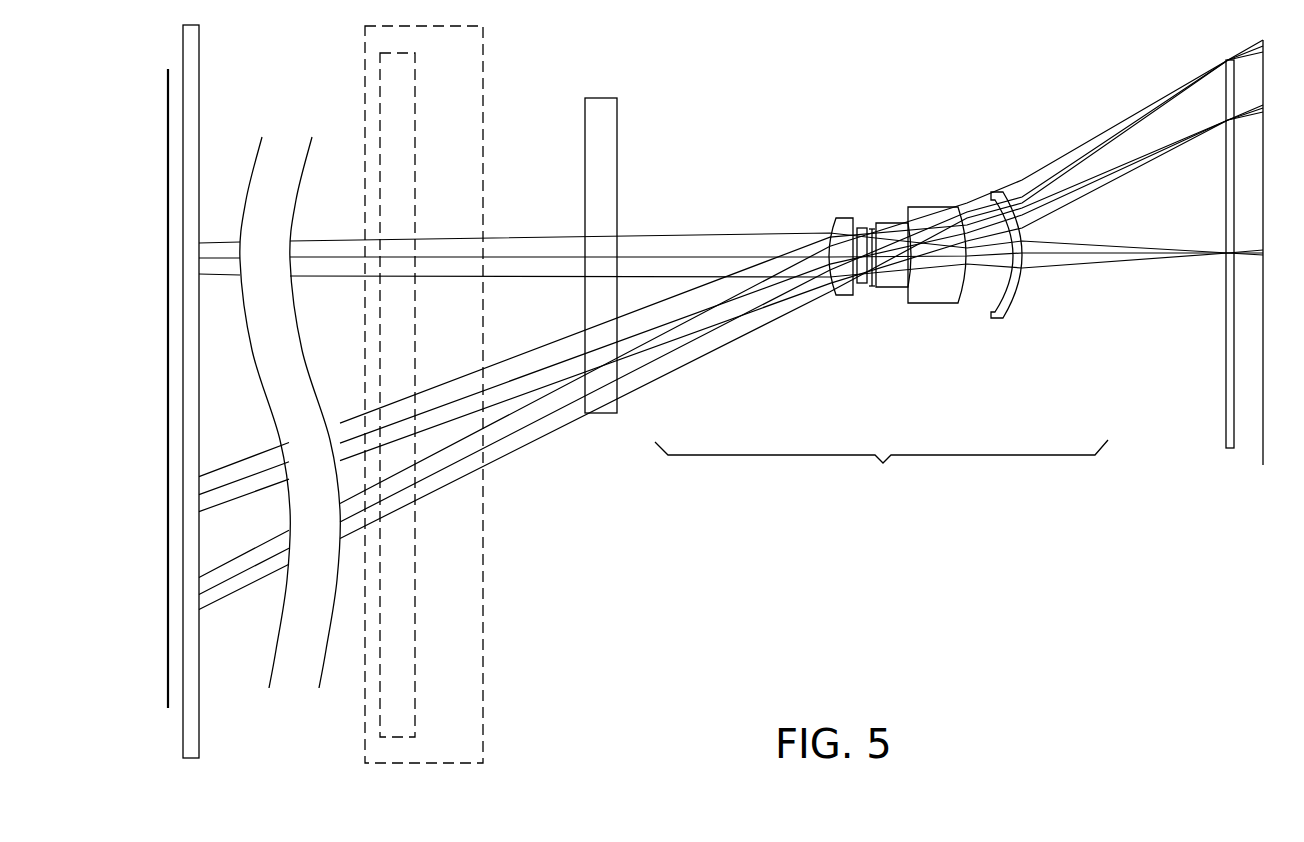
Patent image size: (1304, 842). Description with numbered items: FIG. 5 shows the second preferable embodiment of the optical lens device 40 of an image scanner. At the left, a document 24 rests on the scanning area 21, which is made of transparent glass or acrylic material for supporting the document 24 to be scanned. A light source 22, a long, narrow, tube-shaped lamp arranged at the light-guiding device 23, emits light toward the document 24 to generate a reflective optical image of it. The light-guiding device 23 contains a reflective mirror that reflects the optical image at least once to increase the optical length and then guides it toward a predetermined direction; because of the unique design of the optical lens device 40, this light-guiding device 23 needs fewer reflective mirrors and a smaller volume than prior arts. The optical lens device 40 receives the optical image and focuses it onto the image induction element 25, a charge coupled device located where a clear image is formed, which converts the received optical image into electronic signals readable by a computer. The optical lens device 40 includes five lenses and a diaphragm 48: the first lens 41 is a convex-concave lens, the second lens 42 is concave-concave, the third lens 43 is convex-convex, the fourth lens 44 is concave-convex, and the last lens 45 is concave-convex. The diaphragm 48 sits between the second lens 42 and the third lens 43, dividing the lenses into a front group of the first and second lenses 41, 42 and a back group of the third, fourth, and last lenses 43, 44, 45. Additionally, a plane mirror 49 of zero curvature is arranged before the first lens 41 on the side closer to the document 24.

The scanning area 21 is at (183, 735).
The light source 22 is at (415, 702).
The light-guiding device 23 is at (483, 726).
The document 24 is at (168, 680).
The image induction element 25 is at (1226, 440).
The optical lens device 40 is at (881, 343).
The first lens 41 is at (843, 296).
The second lens 42 is at (864, 283).
The diaphragm 48 is at (873, 288).
The third lens 43 is at (892, 285).
The fourth lens 44 is at (940, 304).
The last lens 45 is at (1003, 320).
The plane mirror 49 is at (617, 411).